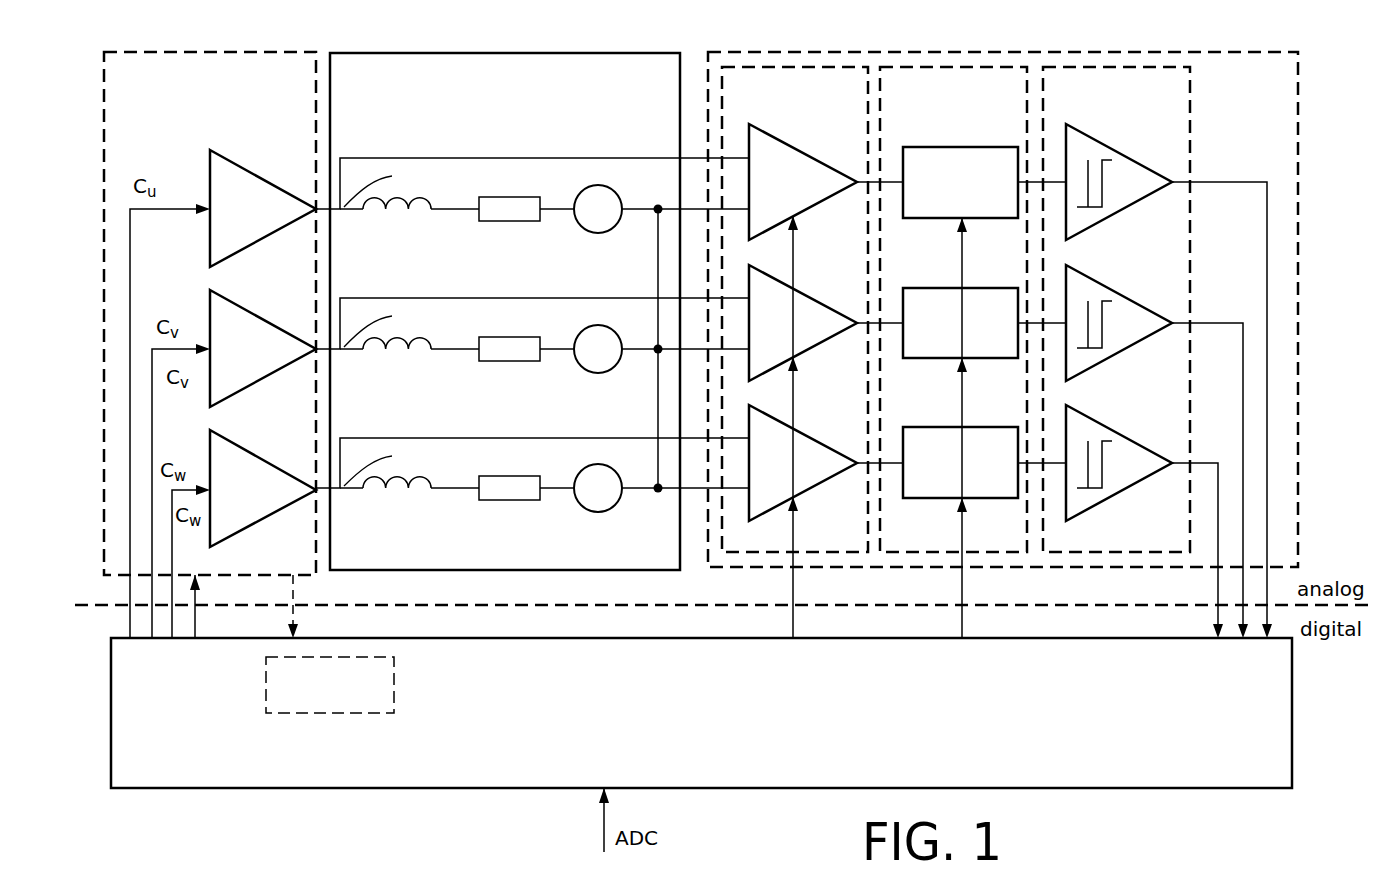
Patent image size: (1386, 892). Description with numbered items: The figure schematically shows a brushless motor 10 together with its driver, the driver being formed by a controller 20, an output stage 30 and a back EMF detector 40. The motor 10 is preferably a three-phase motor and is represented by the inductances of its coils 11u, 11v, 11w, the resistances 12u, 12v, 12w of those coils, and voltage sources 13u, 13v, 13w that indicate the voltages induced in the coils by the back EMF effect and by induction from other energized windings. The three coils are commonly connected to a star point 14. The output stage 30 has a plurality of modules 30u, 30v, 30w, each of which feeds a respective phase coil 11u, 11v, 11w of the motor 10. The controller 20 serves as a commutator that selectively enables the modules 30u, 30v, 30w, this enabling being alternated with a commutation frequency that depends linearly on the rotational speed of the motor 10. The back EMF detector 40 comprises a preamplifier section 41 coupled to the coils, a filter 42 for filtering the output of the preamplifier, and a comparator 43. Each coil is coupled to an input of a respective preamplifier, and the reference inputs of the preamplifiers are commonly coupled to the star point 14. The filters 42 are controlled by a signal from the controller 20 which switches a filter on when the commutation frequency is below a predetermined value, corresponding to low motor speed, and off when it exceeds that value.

The brushless motor 10 is at (502, 48).
The phase coil inductance 11u is at (386, 220).
The phase coil inductance 11v is at (386, 360).
The phase coil inductance 11w is at (386, 499).
The coil resistance 12u is at (510, 222).
The coil resistance 12v is at (510, 362).
The coil resistance 12w is at (510, 501).
The voltage source 13u is at (616, 230).
The voltage source 13v is at (616, 370).
The voltage source 13w is at (616, 509).
The star point 14 is at (657, 472).
The controller 20 is at (1298, 720).
The output stage 30 is at (102, 72).
The output stage module 30u is at (262, 172).
The output stage module 30v is at (262, 312).
The output stage module 30w is at (262, 453).
The back EMF detector 40 is at (1302, 110).
The preamplifier section 41 is at (796, 76).
The filter 42 is at (956, 76).
The comparator 43 is at (1118, 76).